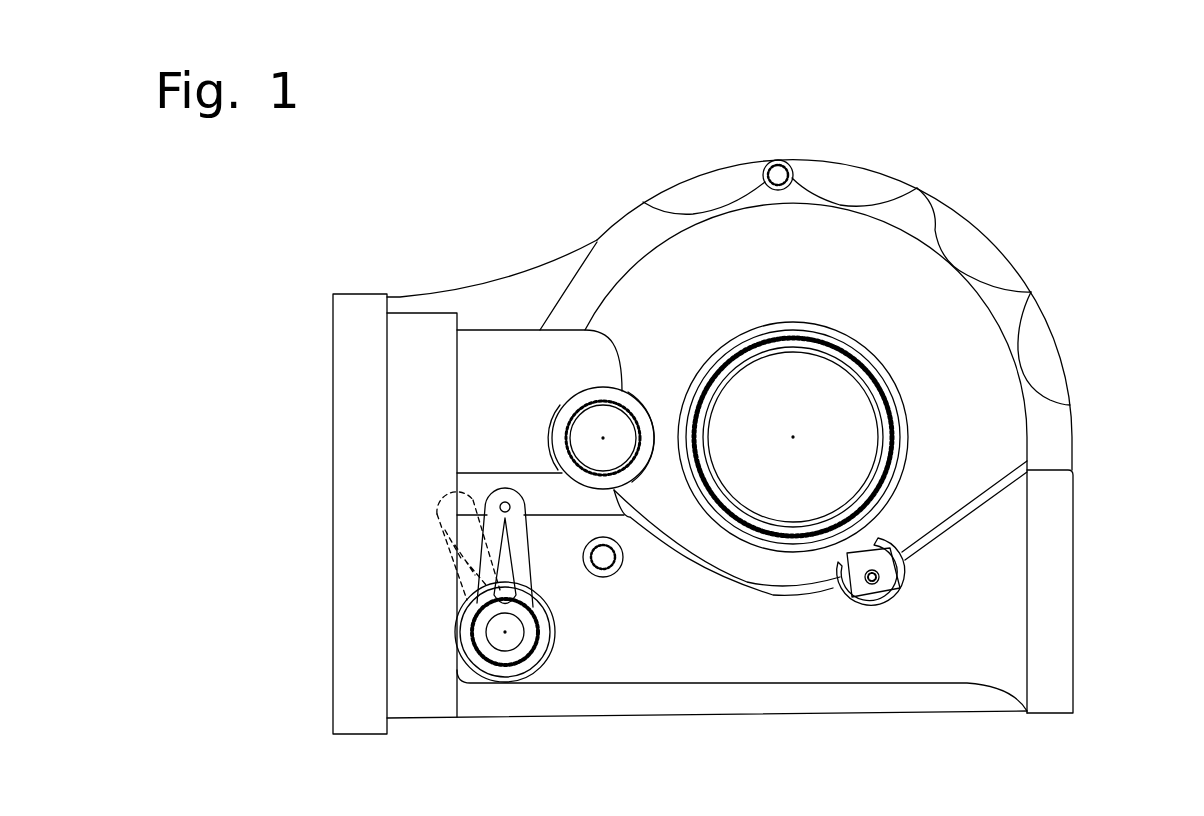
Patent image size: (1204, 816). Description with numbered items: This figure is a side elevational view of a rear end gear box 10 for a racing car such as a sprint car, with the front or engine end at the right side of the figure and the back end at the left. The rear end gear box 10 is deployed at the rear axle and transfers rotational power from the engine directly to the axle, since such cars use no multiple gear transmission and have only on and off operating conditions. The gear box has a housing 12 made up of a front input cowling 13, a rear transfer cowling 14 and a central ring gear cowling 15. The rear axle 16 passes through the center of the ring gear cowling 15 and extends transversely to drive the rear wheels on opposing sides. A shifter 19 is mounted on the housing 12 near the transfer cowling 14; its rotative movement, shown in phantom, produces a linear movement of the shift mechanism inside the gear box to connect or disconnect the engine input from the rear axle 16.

The rear end gear box 10 is at (916, 150).
The housing 12 is at (516, 298).
The front input cowling 13 is at (1060, 590).
The rear transfer cowling 14 is at (352, 505).
The central ring gear cowling 15 is at (957, 240).
The rear axle 16 is at (828, 417).
The shifter 19 is at (537, 558).